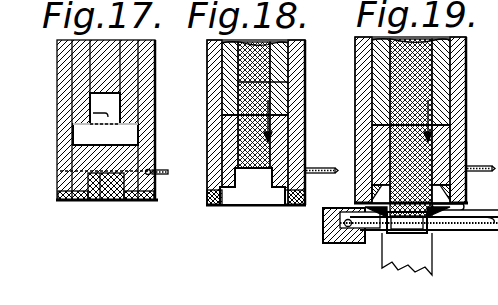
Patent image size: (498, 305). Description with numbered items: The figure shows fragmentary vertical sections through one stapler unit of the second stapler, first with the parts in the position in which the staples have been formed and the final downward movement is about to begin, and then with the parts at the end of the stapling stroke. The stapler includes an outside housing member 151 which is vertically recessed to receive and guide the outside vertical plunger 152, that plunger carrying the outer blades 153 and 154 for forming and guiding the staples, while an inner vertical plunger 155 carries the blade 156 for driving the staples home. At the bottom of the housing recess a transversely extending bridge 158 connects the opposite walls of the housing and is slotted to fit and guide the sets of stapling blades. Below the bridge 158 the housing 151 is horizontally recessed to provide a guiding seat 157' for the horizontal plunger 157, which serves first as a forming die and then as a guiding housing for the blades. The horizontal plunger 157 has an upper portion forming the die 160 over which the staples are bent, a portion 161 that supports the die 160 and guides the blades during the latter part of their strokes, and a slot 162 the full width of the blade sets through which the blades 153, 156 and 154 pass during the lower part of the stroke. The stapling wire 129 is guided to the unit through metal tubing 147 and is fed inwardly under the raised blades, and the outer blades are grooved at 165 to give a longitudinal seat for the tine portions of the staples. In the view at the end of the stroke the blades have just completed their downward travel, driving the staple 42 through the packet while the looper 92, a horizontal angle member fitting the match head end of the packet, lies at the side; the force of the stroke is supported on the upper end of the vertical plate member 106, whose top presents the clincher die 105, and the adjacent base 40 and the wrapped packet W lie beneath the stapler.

In FIG. 17, the outside housing member 151 is at (64, 47).
In FIG. 18, the outside housing member 151 is at (212, 50).
In FIG. 19, the outside housing member 151 is at (458, 51).
In FIG. 17, the vertical plunger 152 is at (100, 78).
In FIG. 18, the vertical plunger 152 is at (245, 82).
In FIG. 19, the vertical plunger 152 is at (420, 67).
In FIG. 17, the vertical plunger 155 is at (88, 88).
In FIG. 18, the vertical plunger 155 is at (303, 40).
In FIG. 19, the vertical plunger 155 is at (405, 80).
In FIG. 17, the blade 156 is at (93, 113).
In FIG. 18, the blade 156 is at (300, 100).
In FIG. 19, the blade 156 is at (440, 127).
In FIG. 17, the blade 154 is at (80, 137).
In FIG. 18, the blade 154 is at (226, 138).
In FIG. 17, the bridge 158 is at (105, 156).
In FIG. 17, the staple 42 is at (95, 183).
In FIG. 18, the staple 42 is at (237, 193).
In FIG. 19, the staple 42 is at (382, 232).
In FIG. 17, the horizontal plunger 157 is at (120, 203).
In FIG. 18, the horizontal plunger 157 is at (252, 207).
In FIG. 17, the guiding seat 157' is at (97, 223).
In FIG. 17, the supporting portion 161 is at (78, 203).
In FIG. 18, the supporting portion 161 is at (214, 207).
In FIG. 17, the forming die 160 is at (97, 203).
In FIG. 18, the forming die 160 is at (256, 186).
In FIG. 17, the metal tubing 147 is at (164, 175).
In FIG. 18, the metal tubing 147 is at (330, 170).
In FIG. 19, the metal tubing 147 is at (462, 173).
In FIG. 18, the blade 153 is at (280, 150).
In FIG. 18, the slot 162 is at (270, 192).
In FIG. 18, the wire 129 is at (208, 172).
In FIG. 19, the groove 165 is at (456, 150).
In FIG. 19, the looper 92 is at (337, 245).
In FIG. 19, the base plate 40 is at (496, 209).
In FIG. 19, the clincher die 105 is at (404, 233).
In FIG. 19, the plate member 106 is at (402, 258).
In FIG. 19, the work piece W is at (497, 276).